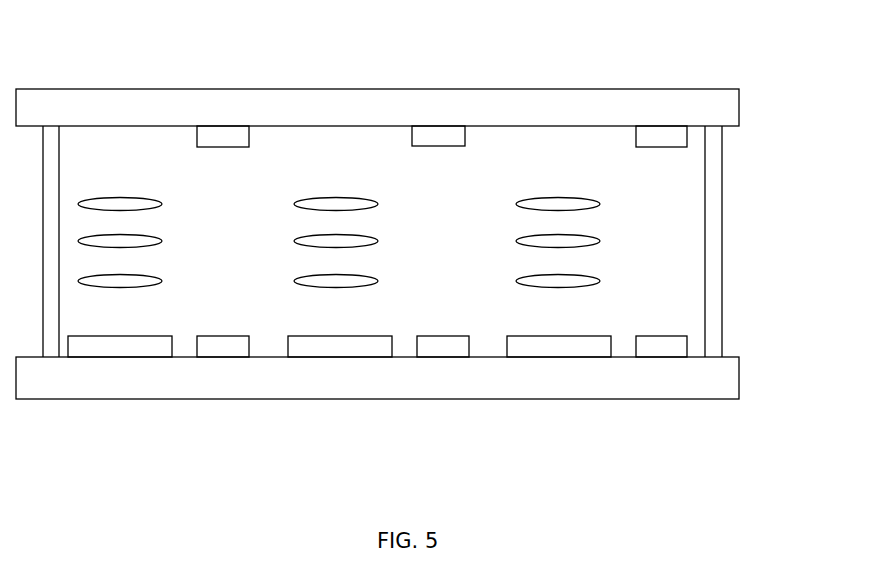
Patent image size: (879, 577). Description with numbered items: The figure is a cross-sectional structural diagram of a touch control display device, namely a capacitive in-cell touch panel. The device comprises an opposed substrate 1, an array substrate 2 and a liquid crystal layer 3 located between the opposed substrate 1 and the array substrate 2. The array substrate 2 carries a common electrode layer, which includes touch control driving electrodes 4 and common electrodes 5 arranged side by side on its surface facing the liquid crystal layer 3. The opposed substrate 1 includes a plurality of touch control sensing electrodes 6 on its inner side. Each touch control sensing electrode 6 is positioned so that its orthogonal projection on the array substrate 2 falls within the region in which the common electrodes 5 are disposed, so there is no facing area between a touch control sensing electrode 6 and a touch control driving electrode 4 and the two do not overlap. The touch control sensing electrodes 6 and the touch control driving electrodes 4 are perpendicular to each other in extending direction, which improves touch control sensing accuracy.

The opposed substrate 1 is at (661, 89).
The array substrate 2 is at (739, 380).
The liquid crystal layer 3 is at (600, 241).
The touch control driving electrode 4 is at (120, 357).
The common electrode 5 is at (222, 357).
The touch control sensing electrode 6 is at (223, 135).